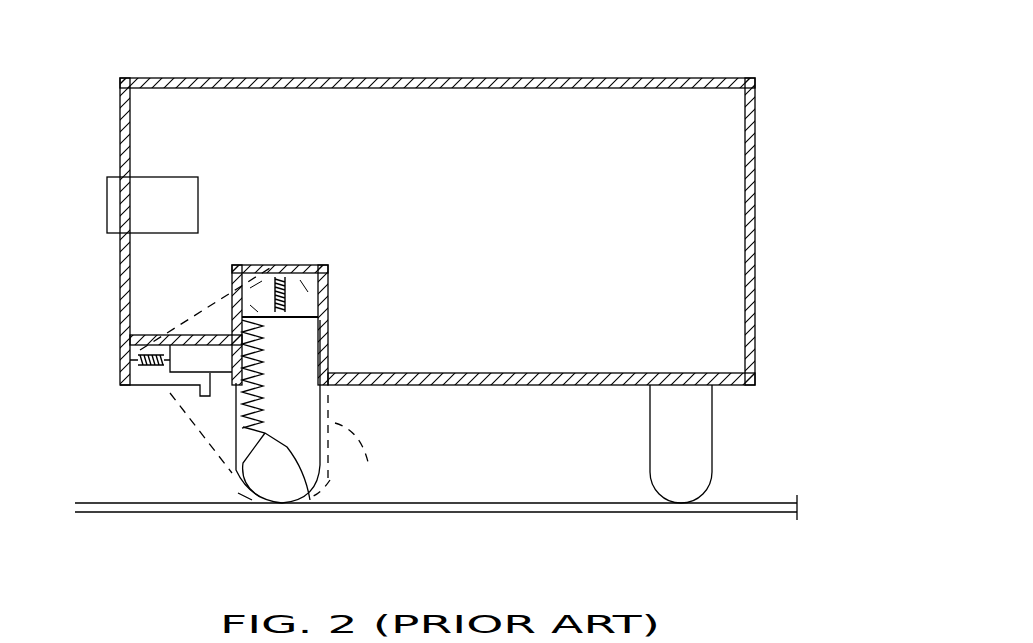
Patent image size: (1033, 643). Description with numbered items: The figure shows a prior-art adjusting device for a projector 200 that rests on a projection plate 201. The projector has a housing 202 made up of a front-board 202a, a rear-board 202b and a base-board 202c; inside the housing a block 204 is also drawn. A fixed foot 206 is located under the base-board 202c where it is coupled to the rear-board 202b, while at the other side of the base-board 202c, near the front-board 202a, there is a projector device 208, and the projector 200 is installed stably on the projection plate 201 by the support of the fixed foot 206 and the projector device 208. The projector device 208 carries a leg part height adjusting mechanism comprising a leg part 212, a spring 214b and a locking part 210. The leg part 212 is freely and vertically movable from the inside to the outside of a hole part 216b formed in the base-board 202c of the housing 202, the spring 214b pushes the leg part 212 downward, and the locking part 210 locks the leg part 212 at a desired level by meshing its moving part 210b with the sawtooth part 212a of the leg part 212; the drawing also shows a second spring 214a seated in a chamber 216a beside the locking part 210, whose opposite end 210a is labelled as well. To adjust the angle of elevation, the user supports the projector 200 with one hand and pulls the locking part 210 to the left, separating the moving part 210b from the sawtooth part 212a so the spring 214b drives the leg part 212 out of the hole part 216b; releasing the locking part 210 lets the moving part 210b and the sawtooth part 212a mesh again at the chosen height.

The projector 200 is at (798, 33).
The projection plate 201 is at (553, 512).
The housing 202 is at (448, 77).
The front-board 202a is at (116, 120).
The rear-board 202b is at (748, 185).
The base-board 202c is at (512, 387).
The internal component block 204 is at (107, 208).
The fixed foot 206 is at (700, 447).
The projector device 208 is at (317, 409).
The locking part 210 is at (173, 390).
The first end of latch member 210a is at (187, 392).
The moving part 210b is at (236, 392).
The leg part 212 is at (286, 500).
The sawtooth part 212a is at (318, 497).
The first spring 214a is at (150, 387).
The spring 214b is at (288, 298).
The first spring chamber 216a is at (136, 350).
The hole part 216b is at (311, 278).